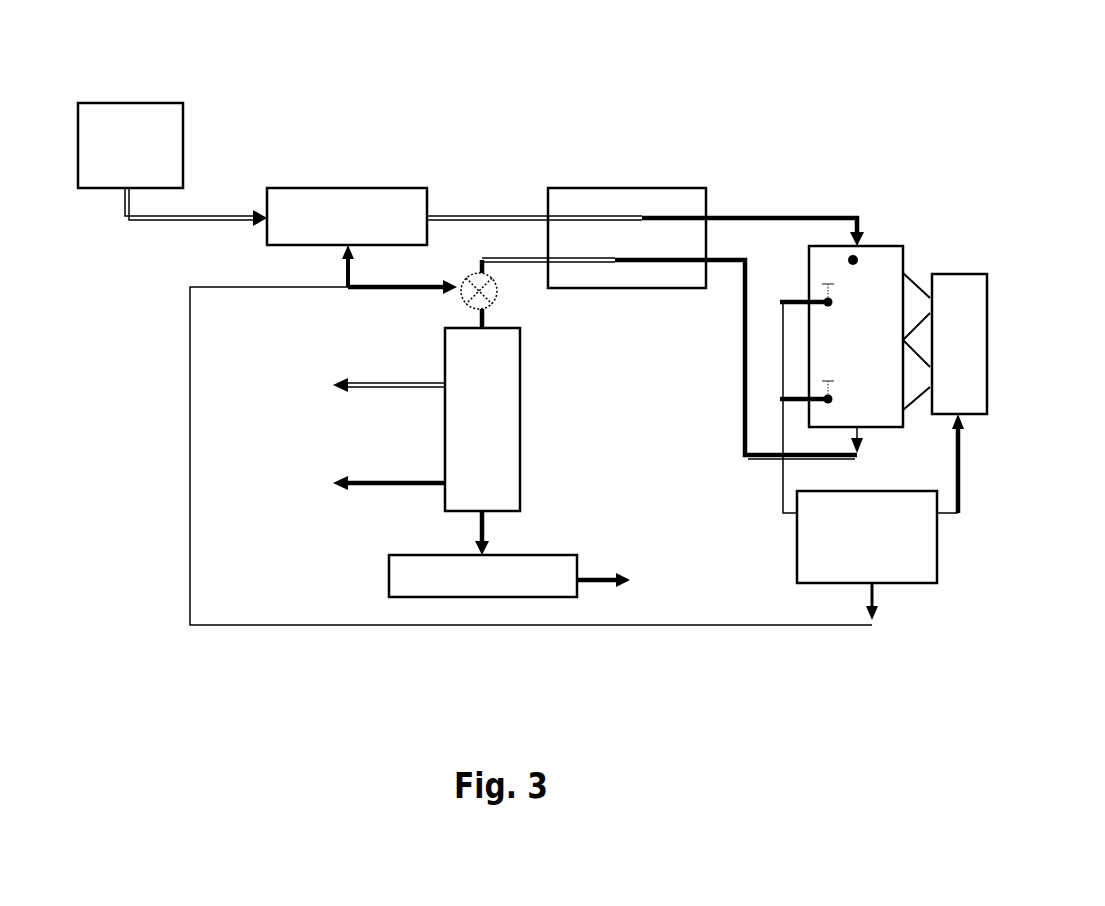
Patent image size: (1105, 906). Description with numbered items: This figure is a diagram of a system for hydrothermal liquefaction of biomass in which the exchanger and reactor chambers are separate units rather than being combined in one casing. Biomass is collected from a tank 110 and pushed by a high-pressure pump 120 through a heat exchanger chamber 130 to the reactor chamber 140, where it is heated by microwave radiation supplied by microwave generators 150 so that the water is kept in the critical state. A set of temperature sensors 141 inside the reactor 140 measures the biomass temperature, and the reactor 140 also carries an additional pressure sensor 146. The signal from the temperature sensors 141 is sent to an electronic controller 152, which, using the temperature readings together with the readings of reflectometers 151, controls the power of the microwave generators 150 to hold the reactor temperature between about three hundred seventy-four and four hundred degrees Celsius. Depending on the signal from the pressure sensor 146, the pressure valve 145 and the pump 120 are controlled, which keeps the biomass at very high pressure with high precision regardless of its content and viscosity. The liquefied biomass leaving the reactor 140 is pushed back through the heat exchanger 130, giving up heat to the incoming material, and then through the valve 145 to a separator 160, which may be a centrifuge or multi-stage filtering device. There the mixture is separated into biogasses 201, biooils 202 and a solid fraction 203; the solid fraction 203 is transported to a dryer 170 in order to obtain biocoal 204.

The tank 110 is at (157, 160).
The high-pressure pump 120 is at (335, 207).
The heat exchanger chamber 130 is at (620, 207).
The reactor chamber 140 is at (861, 358).
The temperature sensors 141 is at (832, 300).
The pressure valve 145 is at (493, 293).
The pressure sensor 146 is at (856, 258).
The microwave generators 150 is at (1073, 389).
The reflectometers 151 is at (932, 377).
The electronic controller 152 is at (927, 557).
The separator 160 is at (498, 430).
The dryer 170 is at (498, 583).
The biogasses 201 is at (337, 478).
The biooils 202 is at (337, 382).
The solid fraction 203 is at (488, 540).
The biocoal 204 is at (726, 549).